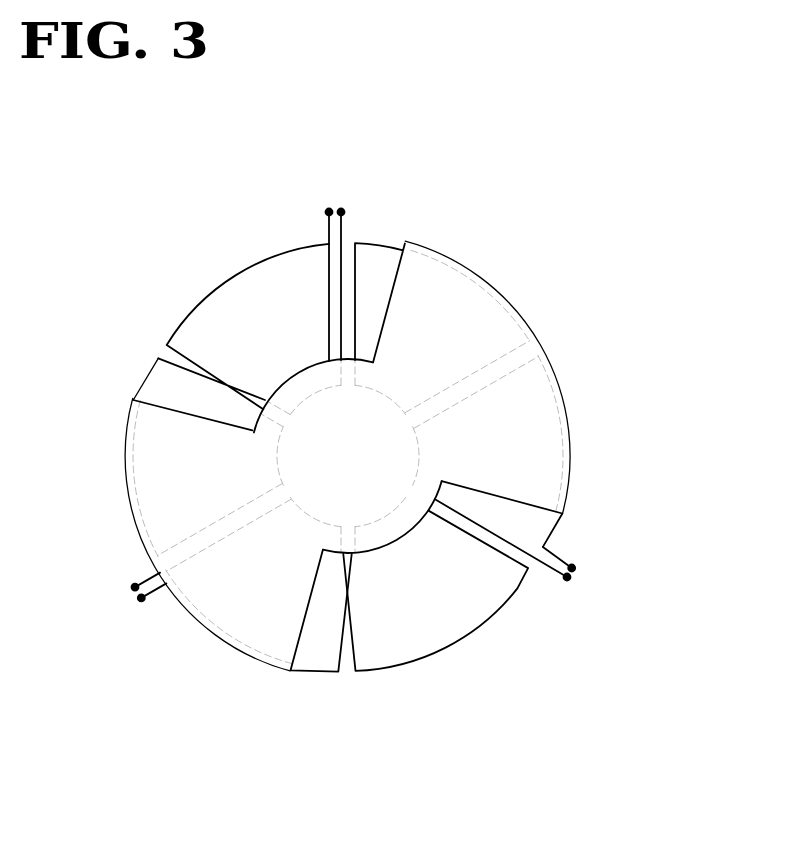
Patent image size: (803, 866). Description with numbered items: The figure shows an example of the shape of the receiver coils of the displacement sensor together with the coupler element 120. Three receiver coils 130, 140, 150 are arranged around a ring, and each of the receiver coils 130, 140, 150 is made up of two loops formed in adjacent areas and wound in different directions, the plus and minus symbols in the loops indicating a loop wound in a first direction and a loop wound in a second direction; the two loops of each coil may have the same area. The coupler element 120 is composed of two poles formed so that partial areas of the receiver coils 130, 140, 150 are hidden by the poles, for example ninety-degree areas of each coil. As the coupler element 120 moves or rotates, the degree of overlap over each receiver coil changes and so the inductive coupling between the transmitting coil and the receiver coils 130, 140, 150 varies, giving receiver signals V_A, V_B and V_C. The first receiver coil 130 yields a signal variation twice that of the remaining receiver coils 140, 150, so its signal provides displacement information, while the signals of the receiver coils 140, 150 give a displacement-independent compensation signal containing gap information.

The coupler element 120 is at (490, 287).
The first receiver coil 130 is at (235, 272).
The second receiver coil 140 is at (570, 456).
The third receiver coil 150 is at (219, 637).